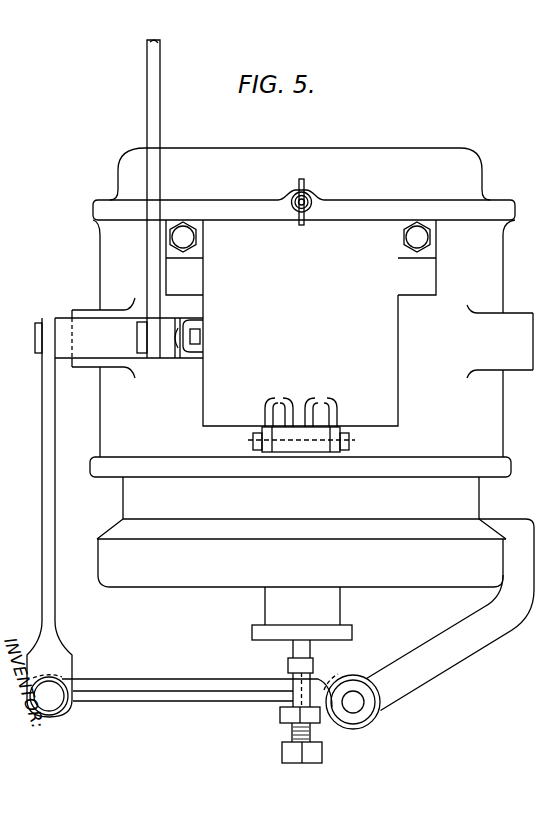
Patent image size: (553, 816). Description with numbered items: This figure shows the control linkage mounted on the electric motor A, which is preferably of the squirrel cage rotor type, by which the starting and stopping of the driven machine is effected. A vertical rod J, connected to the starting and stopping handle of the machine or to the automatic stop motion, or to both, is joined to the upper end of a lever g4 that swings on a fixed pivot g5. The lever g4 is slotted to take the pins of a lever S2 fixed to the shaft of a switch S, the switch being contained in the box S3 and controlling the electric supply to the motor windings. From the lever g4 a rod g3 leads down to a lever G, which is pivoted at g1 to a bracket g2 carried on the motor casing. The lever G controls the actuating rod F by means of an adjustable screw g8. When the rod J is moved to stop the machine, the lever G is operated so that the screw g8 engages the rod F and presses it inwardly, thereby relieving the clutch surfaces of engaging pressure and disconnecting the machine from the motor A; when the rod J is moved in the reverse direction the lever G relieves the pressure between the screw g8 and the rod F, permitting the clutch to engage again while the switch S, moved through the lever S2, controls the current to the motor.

The electric motor A is at (490, 265).
The rod J is at (153, 92).
The switch S is at (193, 333).
The lever S2 is at (180, 352).
The box S3 is at (378, 350).
The pivot g1 is at (353, 708).
The bracket g2 is at (454, 656).
The rod g3 is at (49, 597).
The lever g4 is at (93, 347).
The fixed pivot g5 is at (37, 332).
The adjustable screw g8 is at (290, 752).
The lever G is at (175, 688).
The actuating rod F is at (290, 649).